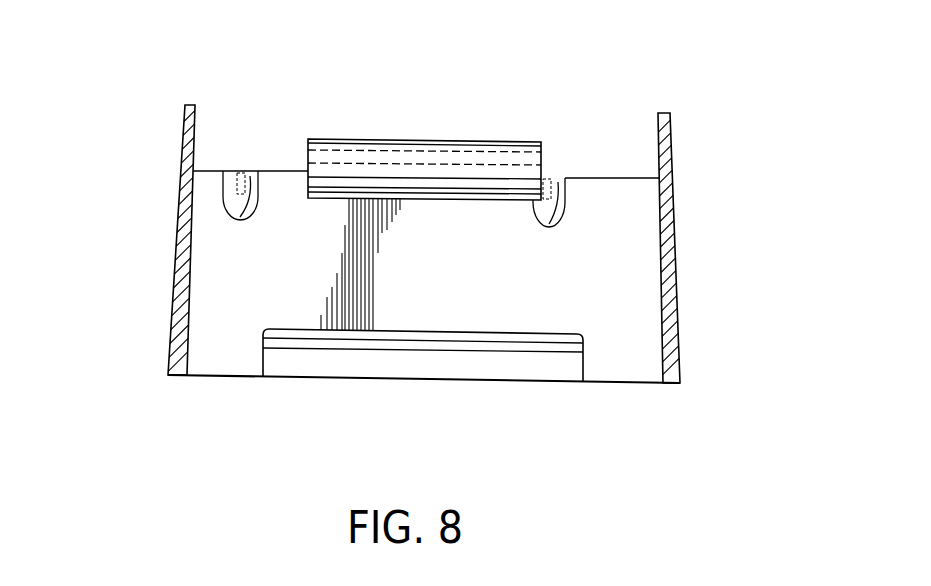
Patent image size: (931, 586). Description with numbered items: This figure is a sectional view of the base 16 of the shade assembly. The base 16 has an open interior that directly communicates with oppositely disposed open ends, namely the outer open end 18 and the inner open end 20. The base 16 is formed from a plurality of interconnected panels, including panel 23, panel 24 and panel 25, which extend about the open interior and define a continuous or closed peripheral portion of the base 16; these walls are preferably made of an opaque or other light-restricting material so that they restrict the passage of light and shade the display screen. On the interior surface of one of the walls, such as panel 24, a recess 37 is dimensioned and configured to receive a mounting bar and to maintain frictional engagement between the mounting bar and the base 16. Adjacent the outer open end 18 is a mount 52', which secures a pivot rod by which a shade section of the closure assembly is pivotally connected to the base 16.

The base 16 is at (722, 190).
The outer open end 18 is at (212, 171).
The inner open end 20 is at (228, 377).
The panel 23 is at (177, 262).
The panel 24 is at (607, 383).
The panel 25 is at (678, 293).
The recess 37 is at (345, 362).
The mount 52' is at (424, 184).